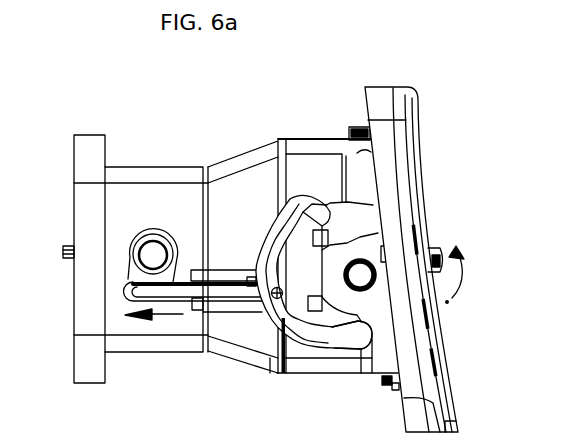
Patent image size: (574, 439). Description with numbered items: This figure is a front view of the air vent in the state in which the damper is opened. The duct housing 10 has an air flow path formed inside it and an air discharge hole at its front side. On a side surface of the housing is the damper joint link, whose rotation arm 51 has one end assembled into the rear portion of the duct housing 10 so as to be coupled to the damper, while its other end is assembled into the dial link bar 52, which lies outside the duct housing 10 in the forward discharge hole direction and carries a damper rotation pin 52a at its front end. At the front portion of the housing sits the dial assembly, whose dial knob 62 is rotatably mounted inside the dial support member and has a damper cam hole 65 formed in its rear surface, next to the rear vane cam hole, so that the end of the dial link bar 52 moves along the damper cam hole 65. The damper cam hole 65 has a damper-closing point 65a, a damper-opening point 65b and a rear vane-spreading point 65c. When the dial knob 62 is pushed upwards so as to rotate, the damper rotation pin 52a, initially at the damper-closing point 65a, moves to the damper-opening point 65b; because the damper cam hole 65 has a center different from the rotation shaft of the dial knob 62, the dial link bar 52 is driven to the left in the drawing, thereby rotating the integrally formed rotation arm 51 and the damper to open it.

The duct housing 10 is at (252, 180).
The rotation arm 51 is at (140, 273).
The dial link bar 52 is at (177, 293).
The damper rotation pin 52a is at (241, 363).
The dial knob 62 is at (418, 250).
The damper cam hole 65 is at (315, 310).
The damper-closing point 65a is at (362, 352).
The damper-opening point 65b is at (272, 362).
The rear vane-spreading point 65c is at (290, 197).